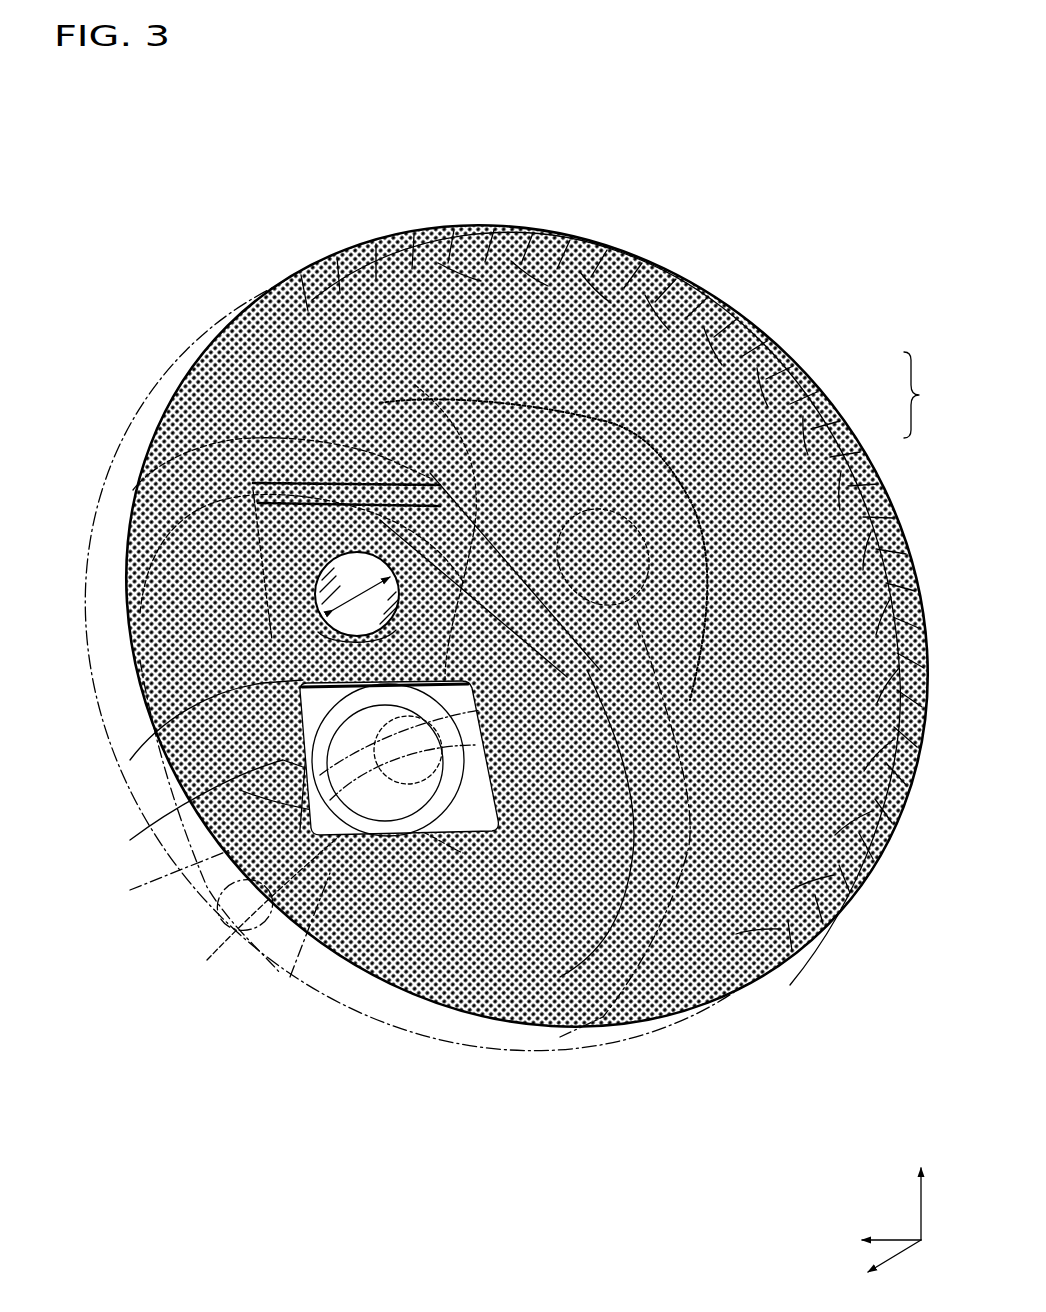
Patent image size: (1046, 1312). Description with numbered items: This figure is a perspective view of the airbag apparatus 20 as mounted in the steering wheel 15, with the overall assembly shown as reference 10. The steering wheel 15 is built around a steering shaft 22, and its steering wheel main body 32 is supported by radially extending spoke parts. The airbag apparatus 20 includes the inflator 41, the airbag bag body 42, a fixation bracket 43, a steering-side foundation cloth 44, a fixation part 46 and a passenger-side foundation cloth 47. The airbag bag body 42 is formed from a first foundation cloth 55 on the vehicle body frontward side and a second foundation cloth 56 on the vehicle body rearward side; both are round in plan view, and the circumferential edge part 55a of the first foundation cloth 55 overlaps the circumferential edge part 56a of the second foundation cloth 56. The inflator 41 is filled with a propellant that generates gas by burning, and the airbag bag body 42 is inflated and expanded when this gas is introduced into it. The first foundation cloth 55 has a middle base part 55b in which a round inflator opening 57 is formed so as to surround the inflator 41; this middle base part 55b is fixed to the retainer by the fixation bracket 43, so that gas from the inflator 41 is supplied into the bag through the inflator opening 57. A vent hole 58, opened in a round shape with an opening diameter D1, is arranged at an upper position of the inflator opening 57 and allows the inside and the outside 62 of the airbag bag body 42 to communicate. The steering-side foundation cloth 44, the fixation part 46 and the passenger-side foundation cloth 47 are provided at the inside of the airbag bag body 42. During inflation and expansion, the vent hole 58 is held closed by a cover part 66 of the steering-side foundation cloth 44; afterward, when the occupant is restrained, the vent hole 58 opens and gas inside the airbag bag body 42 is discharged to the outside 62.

The vehicle lamp 10 is at (523, 673).
The airbag apparatus 20 is at (398, 150).
The airbag bag body 42 is at (624, 604).
The second foundation cloth 56 is at (612, 601).
The circumferential edge part 56a is at (617, 290).
The first foundation cloth 55 is at (639, 604).
The circumferential edge part 55a is at (580, 300).
The middle base part 55b is at (343, 640).
The fixation bracket 43 is at (787, 953).
The passenger-side foundation cloth 47 is at (700, 652).
The steering-side foundation cloth 44 is at (250, 530).
The fixation part 46 is at (337, 478).
The cover part 66 is at (220, 633).
The opening diameter D1 is at (343, 593).
The vent hole 58 is at (333, 625).
The inflator opening 57 is at (305, 890).
The inflator 41 is at (410, 820).
The outside 62 is at (523, 649).
The steering shaft 22 is at (307, 925).
The steering wheel main body 32 is at (420, 1042).
The steering wheel 15 is at (503, 1062).